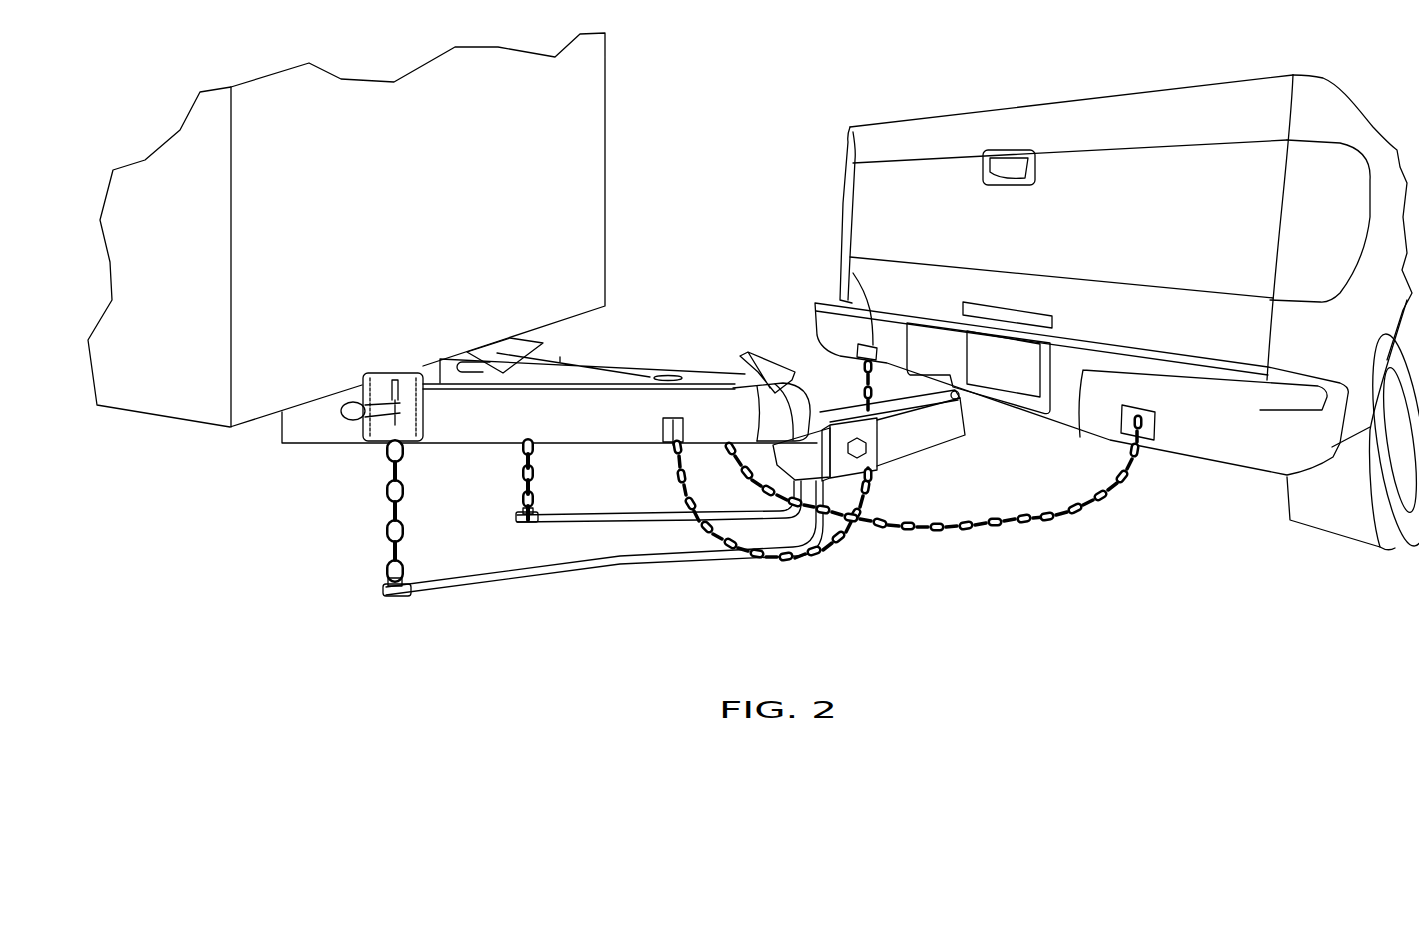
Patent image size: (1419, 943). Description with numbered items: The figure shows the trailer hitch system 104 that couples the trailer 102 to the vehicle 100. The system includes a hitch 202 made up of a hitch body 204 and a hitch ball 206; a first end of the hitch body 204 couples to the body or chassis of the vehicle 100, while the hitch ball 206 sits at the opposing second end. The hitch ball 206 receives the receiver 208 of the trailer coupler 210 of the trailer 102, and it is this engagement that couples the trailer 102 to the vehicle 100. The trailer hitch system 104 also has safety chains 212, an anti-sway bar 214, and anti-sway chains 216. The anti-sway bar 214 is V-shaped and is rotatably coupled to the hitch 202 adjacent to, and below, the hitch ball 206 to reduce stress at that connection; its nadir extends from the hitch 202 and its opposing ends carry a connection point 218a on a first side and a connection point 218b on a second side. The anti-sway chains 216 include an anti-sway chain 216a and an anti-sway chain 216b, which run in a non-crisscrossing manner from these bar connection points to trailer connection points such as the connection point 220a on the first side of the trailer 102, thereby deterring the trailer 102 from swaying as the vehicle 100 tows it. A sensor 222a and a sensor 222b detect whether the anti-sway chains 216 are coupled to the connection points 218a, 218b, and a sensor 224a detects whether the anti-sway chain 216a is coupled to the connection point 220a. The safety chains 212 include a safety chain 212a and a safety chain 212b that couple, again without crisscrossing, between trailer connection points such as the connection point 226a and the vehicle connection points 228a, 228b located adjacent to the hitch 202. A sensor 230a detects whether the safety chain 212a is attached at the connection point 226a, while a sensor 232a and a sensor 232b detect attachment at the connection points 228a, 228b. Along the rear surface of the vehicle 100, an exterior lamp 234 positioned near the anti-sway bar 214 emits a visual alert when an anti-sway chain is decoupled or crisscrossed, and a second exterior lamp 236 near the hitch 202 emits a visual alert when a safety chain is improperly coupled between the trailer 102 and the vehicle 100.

The vehicle 100 is at (988, 226).
The trailer 102 is at (430, 198).
The trailer hitch system 104 is at (741, 124).
The hitch 202 is at (968, 461).
The hitch body 204 is at (925, 440).
The hitch ball 206 is at (807, 378).
The receiver 208 is at (780, 393).
The trailer coupler 210 is at (700, 349).
The safety chains 212 is at (909, 537).
The safety chain 212a is at (787, 563).
The safety chain 212b is at (972, 533).
The anti-sway bar 214 is at (590, 570).
The anti-sway chains 216 is at (385, 488).
The anti-sway chain 216a is at (385, 527).
The anti-sway chain 216b is at (522, 473).
The connection point 218a is at (383, 592).
The connection point 218b is at (517, 515).
The connection point 220a is at (376, 383).
The sensor 222a is at (403, 597).
The sensor 222b is at (533, 524).
The sensor 224a is at (407, 383).
The connection point 226a is at (663, 418).
The connection point 228a is at (866, 360).
The connection point 228b is at (1140, 440).
The sensor 230a is at (693, 418).
The sensor 232a is at (863, 343).
The sensor 232b is at (1157, 422).
The exterior lamp 234 is at (1017, 311).
The exterior lamp 236 is at (958, 399).